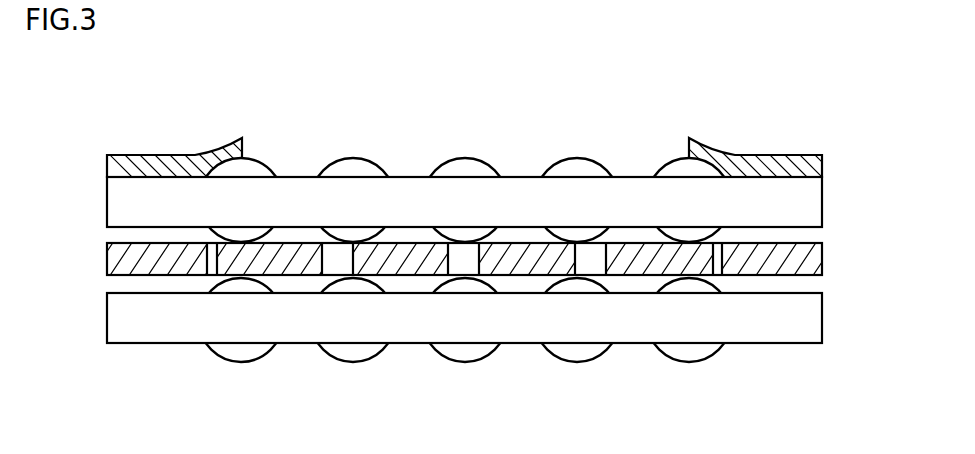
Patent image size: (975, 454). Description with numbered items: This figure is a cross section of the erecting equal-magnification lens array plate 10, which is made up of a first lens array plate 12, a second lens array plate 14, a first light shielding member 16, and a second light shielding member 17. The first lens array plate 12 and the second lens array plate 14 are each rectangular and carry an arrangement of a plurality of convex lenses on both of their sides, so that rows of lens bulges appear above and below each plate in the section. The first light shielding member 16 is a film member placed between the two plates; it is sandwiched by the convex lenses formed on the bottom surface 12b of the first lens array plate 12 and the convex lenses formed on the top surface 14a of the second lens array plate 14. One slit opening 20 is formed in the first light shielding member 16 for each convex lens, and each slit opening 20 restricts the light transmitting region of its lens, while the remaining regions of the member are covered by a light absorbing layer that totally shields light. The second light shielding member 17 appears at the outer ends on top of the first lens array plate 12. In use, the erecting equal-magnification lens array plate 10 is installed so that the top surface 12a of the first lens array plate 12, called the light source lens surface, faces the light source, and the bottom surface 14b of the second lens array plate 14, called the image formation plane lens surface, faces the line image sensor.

The erecting equal-magnification lens array plate 10 is at (786, 118).
The first lens array plate 12 is at (813, 202).
The top surface of the first lens array plate 12a is at (295, 176).
The bottom surface of the first lens array plate 12b is at (113, 228).
The second lens array plate 14 is at (813, 320).
The top surface of the second lens array plate 14a is at (115, 293).
The bottom surface of the second lens array plate 14b is at (163, 345).
The first light shielding member 16 is at (817, 260).
The second light shielding member 17 is at (221, 146).
The slit opening 20 is at (212, 257).